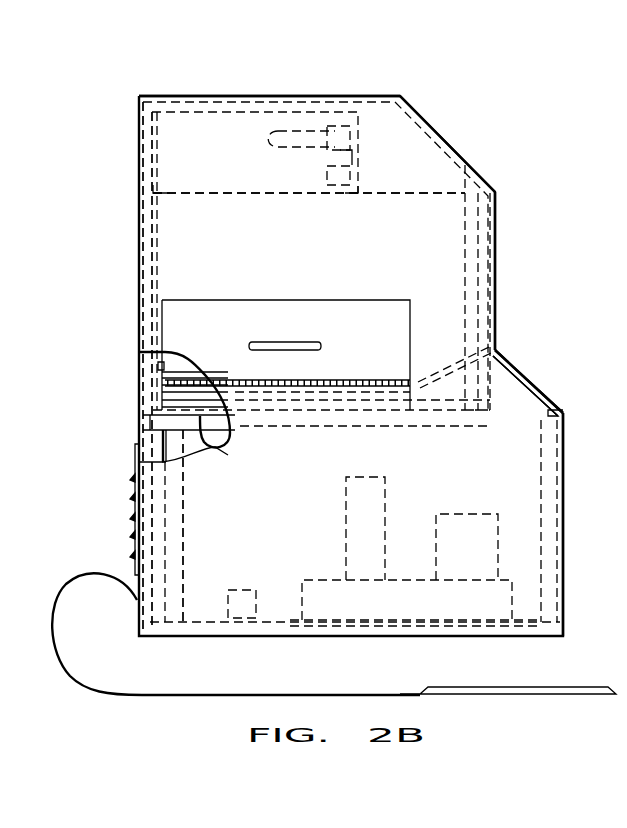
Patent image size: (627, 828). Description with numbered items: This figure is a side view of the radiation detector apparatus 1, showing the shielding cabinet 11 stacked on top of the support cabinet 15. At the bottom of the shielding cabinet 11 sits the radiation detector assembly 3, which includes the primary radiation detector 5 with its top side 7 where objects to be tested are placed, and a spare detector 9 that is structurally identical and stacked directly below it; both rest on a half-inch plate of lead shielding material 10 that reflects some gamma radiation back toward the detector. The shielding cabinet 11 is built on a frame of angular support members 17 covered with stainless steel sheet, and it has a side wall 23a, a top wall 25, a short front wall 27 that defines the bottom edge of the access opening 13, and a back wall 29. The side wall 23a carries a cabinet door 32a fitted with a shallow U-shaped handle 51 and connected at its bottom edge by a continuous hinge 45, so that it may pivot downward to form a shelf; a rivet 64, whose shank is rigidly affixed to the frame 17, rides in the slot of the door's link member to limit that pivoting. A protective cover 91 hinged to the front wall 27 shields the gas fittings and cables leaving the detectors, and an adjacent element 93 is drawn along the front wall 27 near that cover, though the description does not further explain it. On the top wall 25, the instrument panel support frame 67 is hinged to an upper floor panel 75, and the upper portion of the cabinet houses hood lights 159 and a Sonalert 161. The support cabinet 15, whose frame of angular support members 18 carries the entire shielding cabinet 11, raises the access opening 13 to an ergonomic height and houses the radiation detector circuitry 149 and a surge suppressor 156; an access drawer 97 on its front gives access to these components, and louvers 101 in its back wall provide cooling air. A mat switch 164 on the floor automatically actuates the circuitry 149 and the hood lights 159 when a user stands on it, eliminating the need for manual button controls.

The radiation detector apparatus 1 is at (164, 82).
The shielding cabinet 11 is at (138, 224).
The top wall 25 is at (316, 96).
The instrument panel support frame 67 is at (428, 124).
The access opening 13 is at (497, 260).
The back wall 29 is at (138, 314).
The angular support members 17 is at (153, 254).
The side wall 23a is at (314, 250).
The upper floor panel 75 is at (413, 191).
The hood lights 159 is at (268, 145).
The Sonalert 161 is at (326, 176).
The radiation detector assembly 3 is at (398, 296).
The cabinet door 32a is at (302, 330).
The handle 51 is at (316, 346).
The continuous hinge 45 is at (344, 380).
The protective cover 91 is at (433, 374).
The primary radiation detector 5 is at (176, 380).
The spare detector 9 is at (170, 398).
The rivet 64 is at (163, 366).
The top side 7 is at (194, 366).
The lead shielding material 10 is at (204, 459).
The angular support members 18 is at (176, 510).
The louvers 101 is at (133, 497).
The support cabinet 15 is at (130, 546).
The surge suppressor 156 is at (250, 590).
The radiation detector circuitry 149 is at (428, 610).
The front wall 27 is at (522, 364).
The exit guide 93 is at (534, 386).
The access drawer 97 is at (563, 497).
The mat switch 164 is at (482, 688).